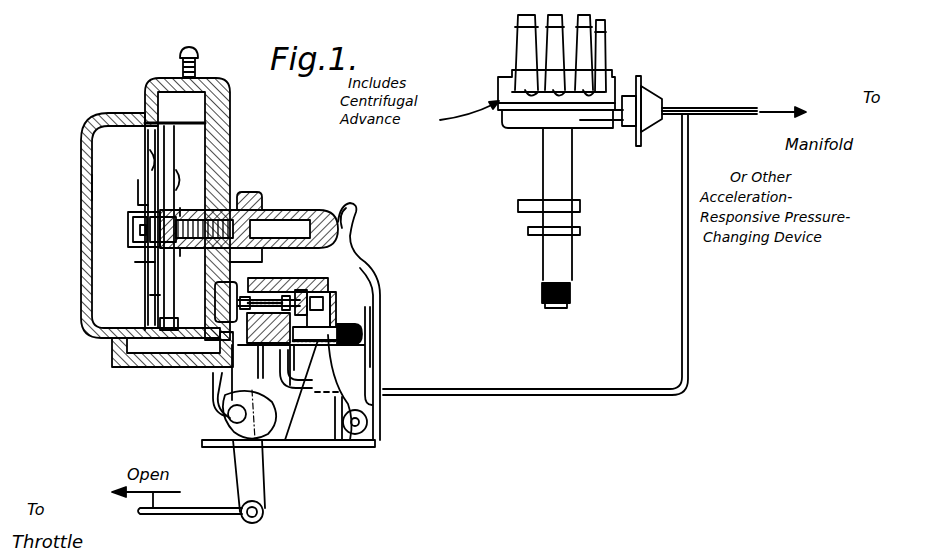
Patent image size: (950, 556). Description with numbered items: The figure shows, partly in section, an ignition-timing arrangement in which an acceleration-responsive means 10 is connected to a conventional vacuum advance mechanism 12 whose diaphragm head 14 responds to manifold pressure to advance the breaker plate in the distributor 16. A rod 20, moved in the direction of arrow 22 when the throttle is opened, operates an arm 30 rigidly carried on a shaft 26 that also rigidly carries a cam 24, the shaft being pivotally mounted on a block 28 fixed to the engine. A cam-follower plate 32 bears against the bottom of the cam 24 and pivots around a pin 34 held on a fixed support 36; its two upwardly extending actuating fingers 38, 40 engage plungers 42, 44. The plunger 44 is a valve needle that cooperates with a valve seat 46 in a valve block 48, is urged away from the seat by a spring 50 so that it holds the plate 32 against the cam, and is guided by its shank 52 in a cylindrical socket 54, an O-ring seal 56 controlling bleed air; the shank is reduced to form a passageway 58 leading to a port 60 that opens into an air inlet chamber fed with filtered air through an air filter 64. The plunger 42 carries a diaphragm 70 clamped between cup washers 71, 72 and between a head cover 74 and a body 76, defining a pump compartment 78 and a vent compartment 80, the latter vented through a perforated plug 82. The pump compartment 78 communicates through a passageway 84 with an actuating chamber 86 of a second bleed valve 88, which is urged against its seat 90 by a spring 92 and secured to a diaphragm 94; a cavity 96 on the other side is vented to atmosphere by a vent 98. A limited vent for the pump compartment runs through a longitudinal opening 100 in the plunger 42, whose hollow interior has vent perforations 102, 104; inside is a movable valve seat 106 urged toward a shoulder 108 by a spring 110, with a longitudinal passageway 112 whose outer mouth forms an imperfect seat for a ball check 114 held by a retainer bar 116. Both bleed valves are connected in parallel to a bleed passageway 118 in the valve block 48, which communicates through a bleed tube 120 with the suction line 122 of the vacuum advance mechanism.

The acceleration-responsive means 10 is at (248, 289).
The vacuum advance mechanism 12 is at (709, 76).
The diaphragm head 14 is at (647, 126).
The distributor 16 is at (541, 161).
The rod 20 is at (235, 526).
The arrow 22 is at (190, 530).
The cam 24 is at (267, 432).
The shaft 26 is at (203, 429).
The block 28 is at (202, 404).
The arm 30 is at (270, 476).
The cam-follower plate 32 is at (288, 463).
The pin 34 is at (380, 441).
The fixed support 36 is at (321, 419).
The actuating finger 38 is at (380, 321).
The actuating finger 40 is at (331, 356).
The plunger 42 is at (249, 221).
The plunger 44 is at (361, 319).
The valve seat 46 is at (279, 365).
The valve block 48 is at (299, 278).
The spring 50 is at (400, 334).
The shank 52 is at (337, 387).
The cylindrical socket 54 is at (306, 369).
The O-ring seal 56 is at (352, 309).
The follower 58 is at (300, 390).
The port 60 is at (332, 309).
The air filter 64 is at (318, 295).
The diaphragm 70 is at (150, 158).
The cup washer 71 is at (148, 297).
The cup washer 72 is at (136, 262).
The head cover 74 is at (130, 225).
The body 76 is at (208, 209).
The pump compartment 78 is at (69, 174).
The vent compartment 80 is at (175, 226).
The perforated plug 82 is at (202, 52).
The passageway 84 is at (152, 349).
The actuating chamber 86 is at (226, 302).
The second bleed valve 88 is at (310, 299).
The seat 90 is at (300, 280).
The spring 92 is at (272, 290).
The diaphragm 94 is at (264, 279).
The cavity 96 is at (247, 372).
The vent 98 is at (231, 395).
The longitudinal opening 100 is at (94, 240).
The vent perforation 102 is at (127, 278).
The vent perforation 104 is at (196, 228).
The movable valve seat 106 is at (183, 228).
The shoulder 108 is at (147, 197).
The spring 110 is at (240, 191).
The longitudinal passageway 112 is at (188, 178).
The ball check 114 is at (148, 212).
The retainer bar 116 is at (136, 229).
The bleed passageway 118 is at (268, 328).
The bleed tube 120 is at (535, 273).
The suction line 122 is at (726, 91).